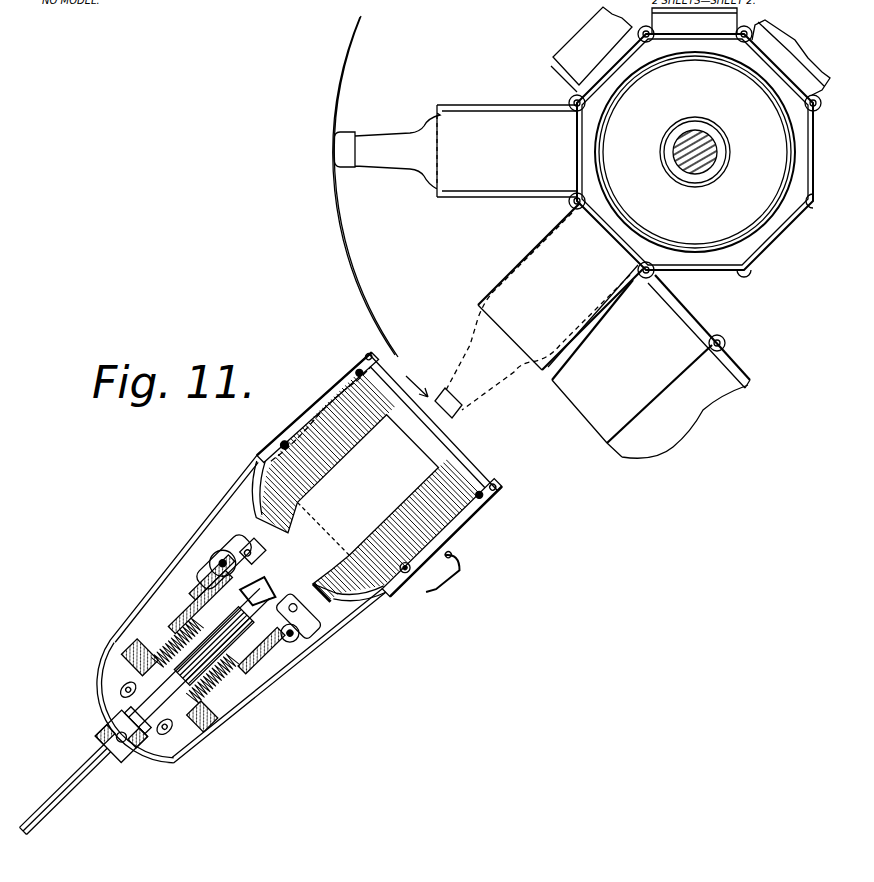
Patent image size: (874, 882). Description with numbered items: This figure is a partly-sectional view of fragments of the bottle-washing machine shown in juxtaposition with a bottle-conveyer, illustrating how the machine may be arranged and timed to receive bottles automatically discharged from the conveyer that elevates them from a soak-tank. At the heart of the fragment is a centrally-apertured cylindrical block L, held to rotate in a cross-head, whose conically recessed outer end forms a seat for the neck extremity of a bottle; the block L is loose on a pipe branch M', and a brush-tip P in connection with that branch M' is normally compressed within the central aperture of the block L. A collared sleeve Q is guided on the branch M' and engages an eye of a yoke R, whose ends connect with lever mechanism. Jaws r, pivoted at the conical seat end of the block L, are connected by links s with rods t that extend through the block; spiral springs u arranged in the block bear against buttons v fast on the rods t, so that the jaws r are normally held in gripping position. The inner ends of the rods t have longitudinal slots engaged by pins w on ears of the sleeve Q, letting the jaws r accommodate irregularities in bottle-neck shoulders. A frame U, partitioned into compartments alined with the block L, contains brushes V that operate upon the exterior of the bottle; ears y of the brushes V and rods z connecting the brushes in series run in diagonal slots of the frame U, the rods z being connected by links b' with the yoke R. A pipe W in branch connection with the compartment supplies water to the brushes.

The links b' is at (272, 576).
The brush-tip P is at (296, 676).
The brushes V is at (348, 383).
The frame U is at (332, 400).
The rods z is at (288, 442).
The ears y is at (366, 357).
The pipe W is at (442, 584).
The pipe branches M' is at (63, 790).
The yoke R is at (108, 726).
The collared sleeves Q is at (128, 762).
The pins w is at (122, 690).
The buttons v is at (138, 665).
The spiral springs u is at (178, 610).
The rods t is at (225, 544).
The cylindrical blocks L is at (200, 584).
The jaws r is at (258, 555).
The links s is at (284, 608).